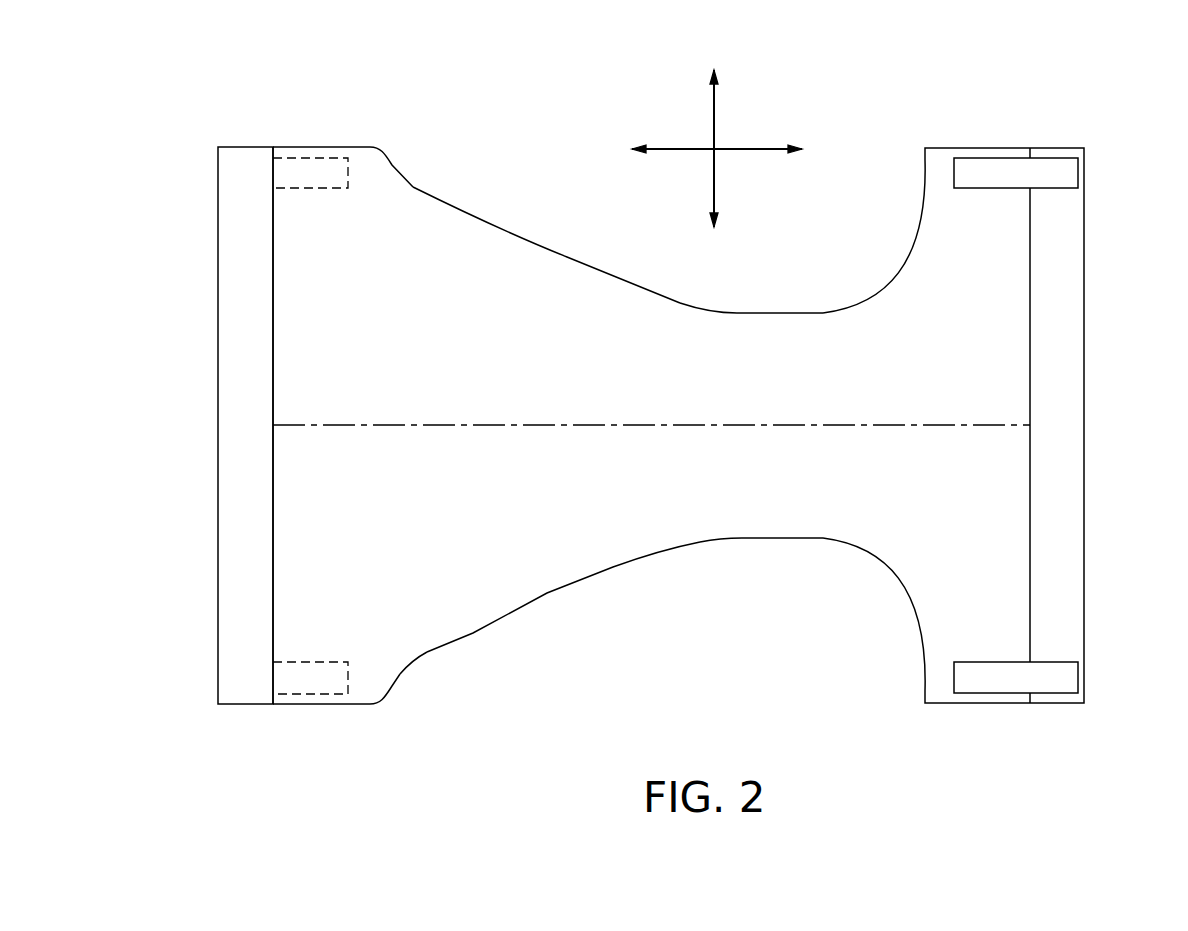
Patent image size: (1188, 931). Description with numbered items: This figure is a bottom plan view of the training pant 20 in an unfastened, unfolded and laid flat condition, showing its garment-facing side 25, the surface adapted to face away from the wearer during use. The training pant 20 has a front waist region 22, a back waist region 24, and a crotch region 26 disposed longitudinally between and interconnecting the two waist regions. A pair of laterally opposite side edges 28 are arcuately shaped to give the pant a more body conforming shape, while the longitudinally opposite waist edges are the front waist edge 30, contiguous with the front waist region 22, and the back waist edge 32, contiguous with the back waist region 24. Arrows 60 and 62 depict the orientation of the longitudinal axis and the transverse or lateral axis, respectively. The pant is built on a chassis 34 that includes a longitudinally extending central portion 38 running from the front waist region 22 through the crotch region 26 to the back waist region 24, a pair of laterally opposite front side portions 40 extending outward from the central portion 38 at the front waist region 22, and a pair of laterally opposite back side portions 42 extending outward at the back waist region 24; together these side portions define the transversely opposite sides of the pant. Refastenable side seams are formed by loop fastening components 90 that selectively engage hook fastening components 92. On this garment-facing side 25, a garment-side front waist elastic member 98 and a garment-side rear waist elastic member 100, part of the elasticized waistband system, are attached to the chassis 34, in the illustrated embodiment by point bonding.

The training pant 20 is at (238, 67).
The front waist region 22 is at (980, 353).
The back waist region 24 is at (428, 592).
The garment-facing side 25 is at (388, 620).
The crotch region 26 is at (745, 505).
The side edges 28 is at (774, 313).
The front waist edge 30 is at (1085, 454).
The back waist edge 32 is at (218, 527).
The chassis 34 is at (450, 240).
The central portion 38 is at (748, 395).
The front side portions 40 is at (960, 232).
The back side portions 42 is at (388, 208).
The longitudinal axis arrow 60 is at (738, 147).
The lateral axis arrow 62 is at (713, 118).
The loop fastening components 90 is at (312, 173).
The hook fastening components 92 is at (995, 157).
The garment-side front waist elastic member 98 is at (1072, 252).
The garment-side rear waist elastic member 100 is at (223, 333).